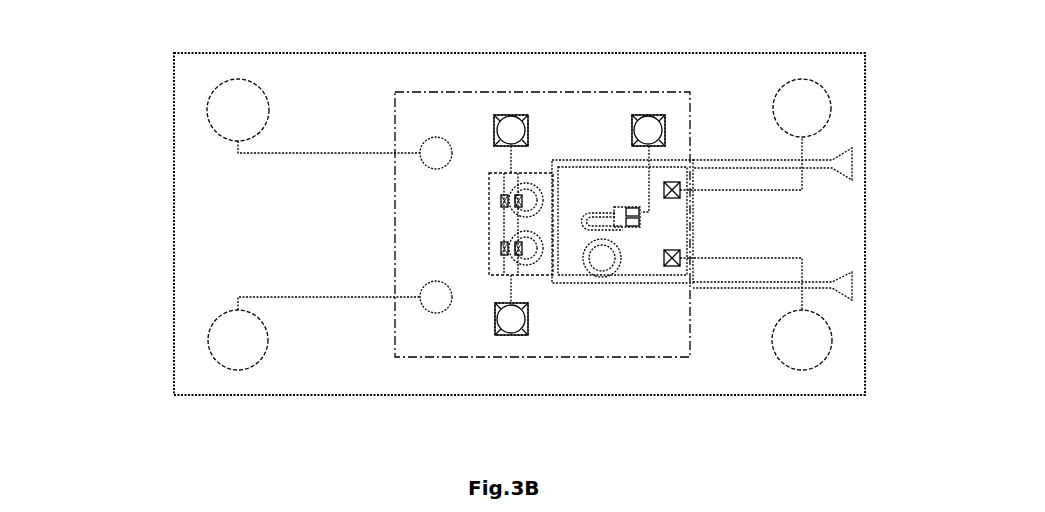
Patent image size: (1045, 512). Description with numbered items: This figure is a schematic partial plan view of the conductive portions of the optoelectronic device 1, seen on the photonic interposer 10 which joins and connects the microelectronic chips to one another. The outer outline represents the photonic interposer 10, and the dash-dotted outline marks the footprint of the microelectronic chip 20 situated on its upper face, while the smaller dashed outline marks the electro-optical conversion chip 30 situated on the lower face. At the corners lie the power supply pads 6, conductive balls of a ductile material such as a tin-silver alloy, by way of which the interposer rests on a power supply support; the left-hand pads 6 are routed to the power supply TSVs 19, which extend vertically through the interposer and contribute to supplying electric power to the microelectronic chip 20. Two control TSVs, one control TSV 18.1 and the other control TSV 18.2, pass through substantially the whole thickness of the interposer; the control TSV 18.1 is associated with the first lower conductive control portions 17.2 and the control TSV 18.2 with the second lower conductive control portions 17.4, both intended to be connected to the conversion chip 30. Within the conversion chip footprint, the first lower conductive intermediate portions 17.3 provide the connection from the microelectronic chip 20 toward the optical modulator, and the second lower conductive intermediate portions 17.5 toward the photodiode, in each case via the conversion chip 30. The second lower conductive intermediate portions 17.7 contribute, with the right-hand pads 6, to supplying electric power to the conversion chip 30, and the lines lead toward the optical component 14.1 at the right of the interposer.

The optoelectronic device 1 is at (86, 50).
The photonic interposer 10 is at (172, 225).
The power supply pads 6 is at (272, 112).
The microelectronic chip 20 is at (392, 224).
The power supply TSVs 19 is at (425, 141).
The control TSV 18.1 is at (497, 118).
The first lower conductive control portions 17.2 is at (530, 128).
The control TSV 18.2 is at (635, 118).
The second lower conductive control portions 17.4 is at (667, 128).
The electro-optical conversion chip 30 is at (487, 237).
The first lower conductive intermediate portions 17.3 is at (499, 202).
The second lower conductive intermediate portions 17.5 is at (644, 222).
The second lower conductive intermediate portions 17.7 is at (672, 268).
The outlet / waste collection 14.1 is at (815, 280).